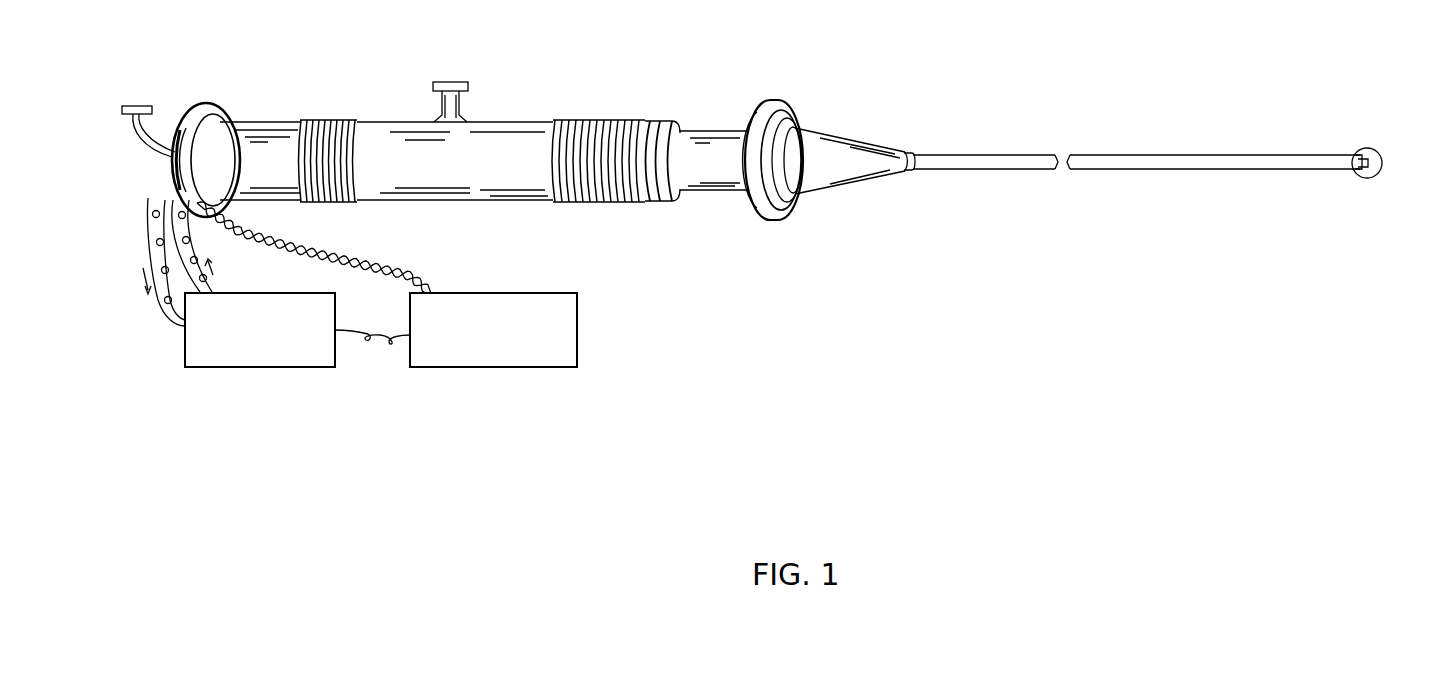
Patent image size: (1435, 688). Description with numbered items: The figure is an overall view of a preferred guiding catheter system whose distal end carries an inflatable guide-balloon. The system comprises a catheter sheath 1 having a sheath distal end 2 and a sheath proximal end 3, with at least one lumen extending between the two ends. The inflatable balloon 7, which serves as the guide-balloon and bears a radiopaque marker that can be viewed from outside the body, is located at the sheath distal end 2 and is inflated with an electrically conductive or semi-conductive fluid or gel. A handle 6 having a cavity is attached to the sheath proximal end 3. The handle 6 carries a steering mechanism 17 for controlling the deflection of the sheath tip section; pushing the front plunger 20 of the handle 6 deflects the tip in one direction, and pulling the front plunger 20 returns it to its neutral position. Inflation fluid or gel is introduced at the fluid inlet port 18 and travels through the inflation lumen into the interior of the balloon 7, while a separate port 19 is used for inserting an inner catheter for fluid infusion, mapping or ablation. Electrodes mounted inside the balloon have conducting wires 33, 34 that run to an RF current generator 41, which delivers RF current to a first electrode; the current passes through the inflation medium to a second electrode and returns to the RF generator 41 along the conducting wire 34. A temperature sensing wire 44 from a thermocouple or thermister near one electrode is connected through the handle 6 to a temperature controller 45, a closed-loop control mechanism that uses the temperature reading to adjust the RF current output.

The catheter sheath 1 is at (1125, 152).
The sheath distal end 2 is at (1380, 157).
The sheath proximal end 3 is at (918, 150).
The handle 6 is at (557, 121).
The inflatable balloon 7 is at (1363, 150).
The steering mechanism 17 is at (728, 200).
The fluid inlet port 18 is at (475, 75).
The separate port 19 is at (152, 102).
The front plunger 20 is at (765, 225).
The conducting wire 33 is at (206, 285).
The conducting wire 34 is at (150, 230).
The RF current generator 41 is at (335, 308).
The temperature sensing wire 44 is at (428, 266).
The temperature controller 45 is at (578, 316).